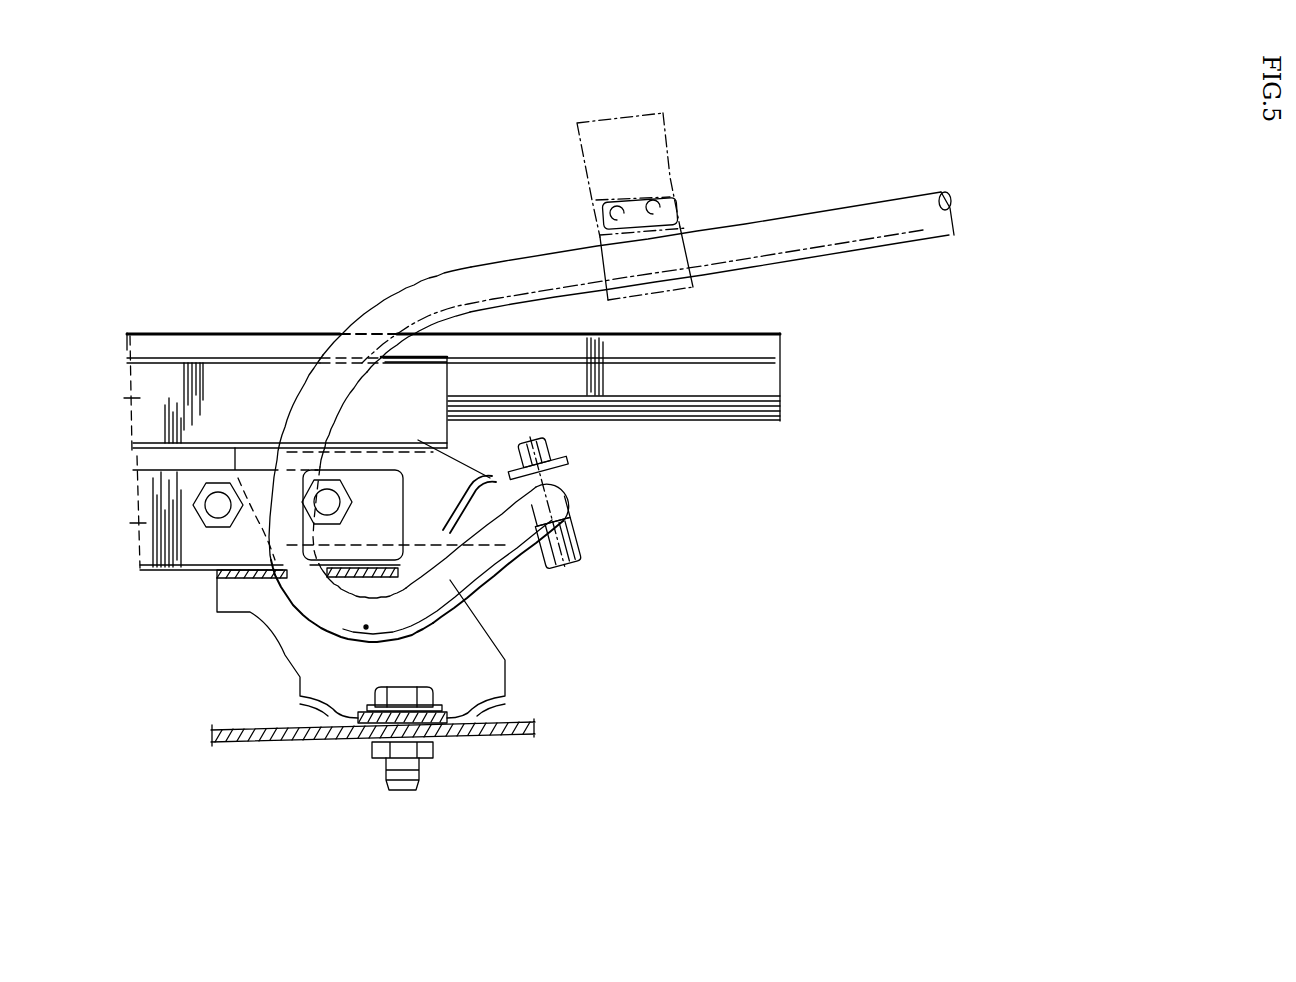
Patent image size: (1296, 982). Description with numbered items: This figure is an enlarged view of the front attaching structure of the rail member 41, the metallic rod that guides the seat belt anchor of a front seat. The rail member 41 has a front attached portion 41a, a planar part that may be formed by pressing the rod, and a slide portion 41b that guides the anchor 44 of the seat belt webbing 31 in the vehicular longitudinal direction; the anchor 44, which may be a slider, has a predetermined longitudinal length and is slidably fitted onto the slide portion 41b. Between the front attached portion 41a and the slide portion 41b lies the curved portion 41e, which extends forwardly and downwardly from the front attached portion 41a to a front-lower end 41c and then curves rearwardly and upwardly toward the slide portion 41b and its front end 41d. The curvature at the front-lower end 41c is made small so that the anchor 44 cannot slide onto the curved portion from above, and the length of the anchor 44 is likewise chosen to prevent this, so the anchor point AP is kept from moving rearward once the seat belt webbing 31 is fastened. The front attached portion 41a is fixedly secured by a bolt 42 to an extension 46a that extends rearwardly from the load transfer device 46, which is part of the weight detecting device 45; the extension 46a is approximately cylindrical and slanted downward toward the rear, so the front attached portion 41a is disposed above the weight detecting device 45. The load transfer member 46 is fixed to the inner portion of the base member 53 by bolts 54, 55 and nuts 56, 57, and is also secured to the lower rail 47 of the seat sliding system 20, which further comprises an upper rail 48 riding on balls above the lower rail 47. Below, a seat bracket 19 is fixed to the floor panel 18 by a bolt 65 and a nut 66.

The floor panel 18 is at (250, 745).
The seat bracket 19 is at (300, 683).
The seat sliding system 20 is at (220, 322).
The seat belt webbing 31 is at (629, 214).
The rail member 41 is at (591, 415).
The front attached portion 41a is at (584, 518).
The slide portion 41b is at (822, 262).
The front-lower end 41c is at (347, 633).
The front end of the slide portion 41d is at (455, 290).
The curved portion 41e is at (286, 399).
The bolt 42 is at (578, 480).
The anchor 44 is at (688, 292).
The weight detecting device 45 is at (167, 580).
The load transfer device 46 is at (465, 471).
The extension 46a is at (586, 560).
The lower rail 47 is at (126, 398).
The upper rail 48 is at (770, 385).
The base member 53 is at (132, 523).
The bolt 54 is at (230, 486).
The bolt 55 is at (334, 510).
The nut 56 is at (224, 532).
The nut 57 is at (347, 505).
The bolt 65 is at (432, 693).
The nut 66 is at (432, 750).
The anchor point AP is at (370, 631).